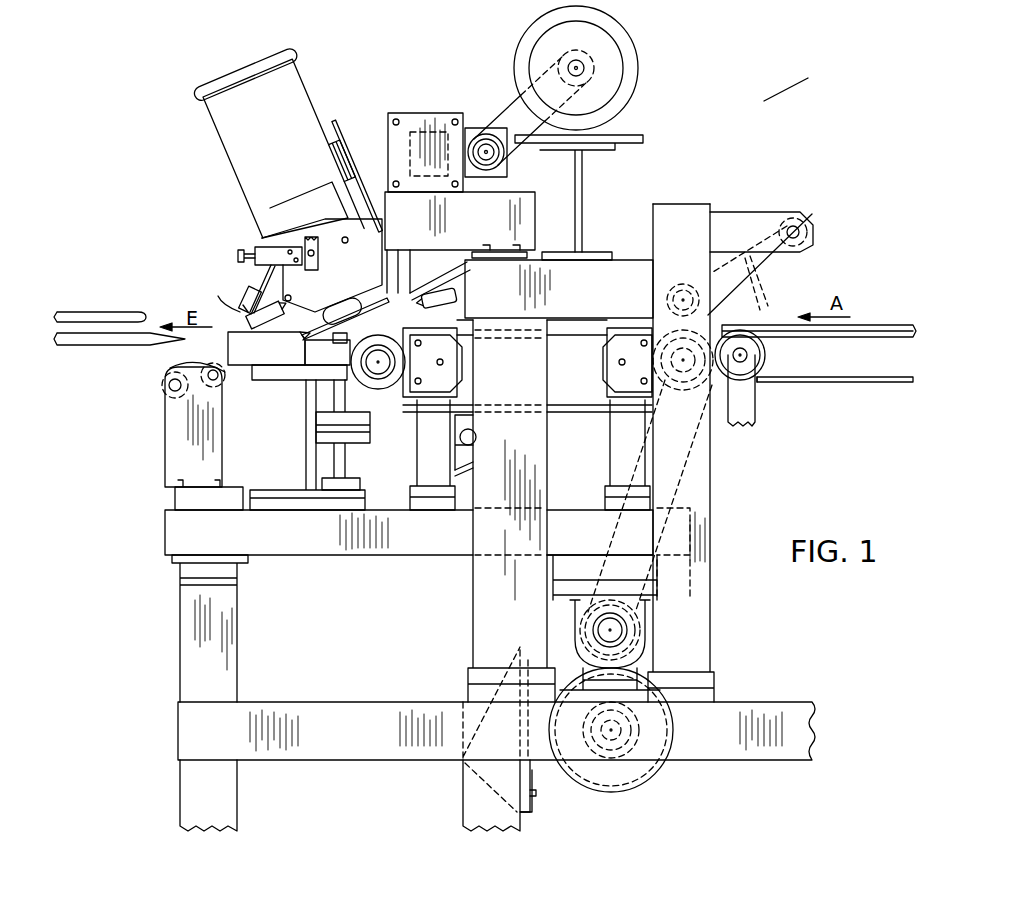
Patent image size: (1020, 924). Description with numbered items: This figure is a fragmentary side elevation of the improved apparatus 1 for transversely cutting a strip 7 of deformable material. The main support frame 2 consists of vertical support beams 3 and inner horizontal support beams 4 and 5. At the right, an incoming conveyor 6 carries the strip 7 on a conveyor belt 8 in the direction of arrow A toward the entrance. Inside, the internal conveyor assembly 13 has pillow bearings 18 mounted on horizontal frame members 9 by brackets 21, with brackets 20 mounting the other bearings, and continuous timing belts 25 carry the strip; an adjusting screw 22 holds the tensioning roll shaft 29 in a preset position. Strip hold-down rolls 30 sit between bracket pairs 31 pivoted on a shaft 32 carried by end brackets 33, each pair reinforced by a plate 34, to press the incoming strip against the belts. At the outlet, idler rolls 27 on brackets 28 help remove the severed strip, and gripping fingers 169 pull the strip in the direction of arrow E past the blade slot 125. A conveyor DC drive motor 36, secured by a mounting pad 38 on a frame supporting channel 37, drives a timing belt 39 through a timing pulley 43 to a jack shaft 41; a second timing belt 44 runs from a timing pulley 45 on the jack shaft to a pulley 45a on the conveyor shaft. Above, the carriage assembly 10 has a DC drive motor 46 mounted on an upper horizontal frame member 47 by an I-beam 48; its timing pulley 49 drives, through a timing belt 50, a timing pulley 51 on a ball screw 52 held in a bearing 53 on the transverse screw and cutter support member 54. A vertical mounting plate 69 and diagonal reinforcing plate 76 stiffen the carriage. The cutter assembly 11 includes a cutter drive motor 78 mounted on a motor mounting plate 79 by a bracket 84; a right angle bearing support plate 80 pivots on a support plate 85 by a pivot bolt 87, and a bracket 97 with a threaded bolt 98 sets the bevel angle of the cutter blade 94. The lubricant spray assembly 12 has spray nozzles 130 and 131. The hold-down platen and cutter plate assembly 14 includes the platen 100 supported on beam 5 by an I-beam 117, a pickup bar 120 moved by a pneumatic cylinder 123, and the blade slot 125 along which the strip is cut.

The apparatus 1 is at (757, 105).
The main support frame 2 is at (170, 637).
The vertical support beams 3 is at (215, 788).
The inner horizontal support beam 4 is at (323, 718).
The inner horizontal support beam 5 is at (270, 540).
The incoming conveyor 6 is at (803, 385).
The strip 7 is at (880, 325).
The conveyor belt 8 is at (890, 380).
The horizontal frame members 9 is at (437, 490).
The carriage assembly 10 is at (447, 95).
The cutter assembly 11 is at (228, 205).
The lubricant spray assembly 12 is at (200, 282).
The internal conveyor assembly 13 is at (447, 377).
The hold-down platen and cutter plate assembly 14 is at (280, 350).
The pillow bearings 18 is at (376, 389).
The brackets 20 is at (640, 365).
The brackets 21 is at (432, 352).
The adjusting screw 22 is at (460, 470).
The timing belts 25 is at (575, 330).
The idler rolls 27 is at (180, 372).
The brackets 28 is at (183, 440).
The shaft 29 is at (476, 436).
The strip hold-down rolls 30 is at (678, 300).
The bracket pairs 31 is at (760, 270).
The shaft 32 is at (797, 226).
The end brackets 33 is at (737, 225).
The plate 34 is at (735, 300).
The conveyor DC drive motor 36 is at (628, 775).
The frame supporting channel 37 is at (520, 737).
The mounting pad 38 is at (530, 772).
The timing belt 39 is at (640, 668).
The jack shaft 41 is at (598, 631).
The timing pulley 43 is at (640, 735).
The second timing belt 44 is at (690, 500).
The timing pulley 45 is at (650, 638).
The pulley 45a is at (712, 420).
The DC drive motor 46 is at (610, 45).
The upper horizontal frame member 47 is at (620, 275).
The I-beam 48 is at (585, 180).
The timing pulley 49 is at (598, 74).
The timing belt 50 is at (512, 100).
The timing pulley 51 is at (505, 152).
The ball screw 52 is at (486, 145).
The bearing 53 is at (480, 178).
The screw and cutter support member 54 is at (406, 160).
The vertical mounting plate 69 is at (403, 262).
The reinforcing plate 76 is at (430, 266).
The cutter drive motor 78 is at (268, 100).
The motor mounting plate 79 is at (330, 150).
The right angle bearing support plate 80 is at (291, 215).
The bracket 84 is at (320, 163).
The support plate 85 is at (362, 274).
The pivot bolt 87 is at (292, 298).
The cutter blade 94 is at (375, 305).
The bracket 97 is at (265, 253).
The threaded bolt 98 is at (237, 255).
The platen 100 is at (272, 360).
The I-beam 117 is at (305, 462).
The pickup bar 120 is at (328, 346).
The pneumatic cylinder 123 is at (352, 441).
The blade slot 125 is at (303, 366).
The spray nozzle 130 is at (455, 300).
The spray nozzle 131 is at (243, 305).
The gripping fingers 169 is at (100, 312).